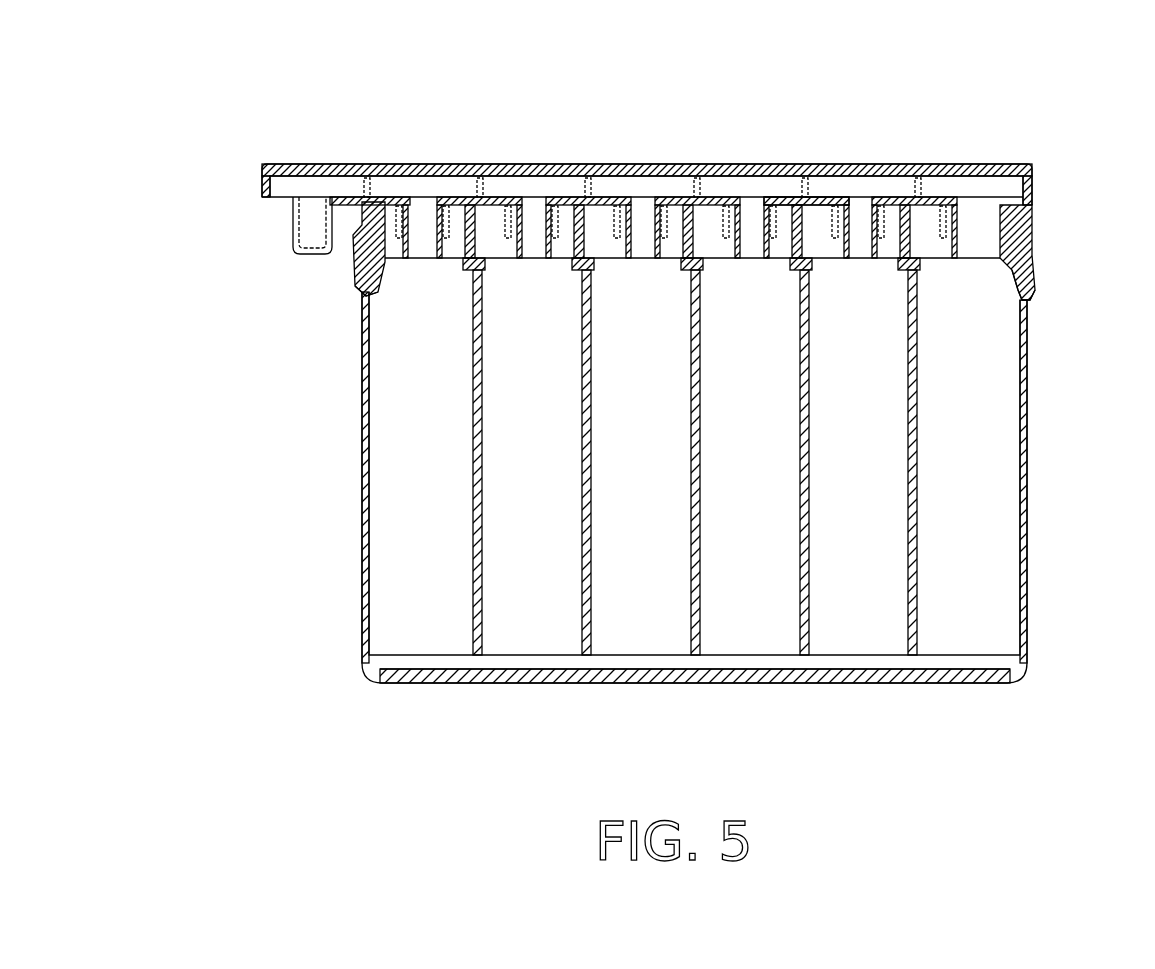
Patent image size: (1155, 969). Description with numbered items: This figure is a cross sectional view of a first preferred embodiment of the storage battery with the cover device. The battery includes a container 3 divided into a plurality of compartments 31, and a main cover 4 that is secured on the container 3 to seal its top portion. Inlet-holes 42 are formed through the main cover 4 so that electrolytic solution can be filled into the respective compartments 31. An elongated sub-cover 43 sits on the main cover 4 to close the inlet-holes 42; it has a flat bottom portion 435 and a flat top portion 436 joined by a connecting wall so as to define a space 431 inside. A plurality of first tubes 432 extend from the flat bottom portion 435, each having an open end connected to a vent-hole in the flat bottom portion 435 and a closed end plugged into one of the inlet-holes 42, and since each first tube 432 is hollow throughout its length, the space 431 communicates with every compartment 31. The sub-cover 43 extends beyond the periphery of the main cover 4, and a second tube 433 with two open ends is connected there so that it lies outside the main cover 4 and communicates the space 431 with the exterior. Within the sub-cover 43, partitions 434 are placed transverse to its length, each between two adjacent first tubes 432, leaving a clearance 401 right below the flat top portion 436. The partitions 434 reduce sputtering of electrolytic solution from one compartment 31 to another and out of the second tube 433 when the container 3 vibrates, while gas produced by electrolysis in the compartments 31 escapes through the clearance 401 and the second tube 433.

The container 3 is at (368, 570).
The compartments 31 is at (385, 425).
The main cover 4 is at (664, 188).
The clearance 401 is at (378, 173).
The inlet-holes 42 is at (395, 232).
The sub-cover 43 is at (617, 173).
The space 431 is at (503, 183).
The first tubes 432 is at (415, 252).
The second tube 433 is at (297, 234).
The partitions 434 is at (340, 167).
The flat bottom portion 435 is at (763, 197).
The flat top portion 436 is at (807, 177).